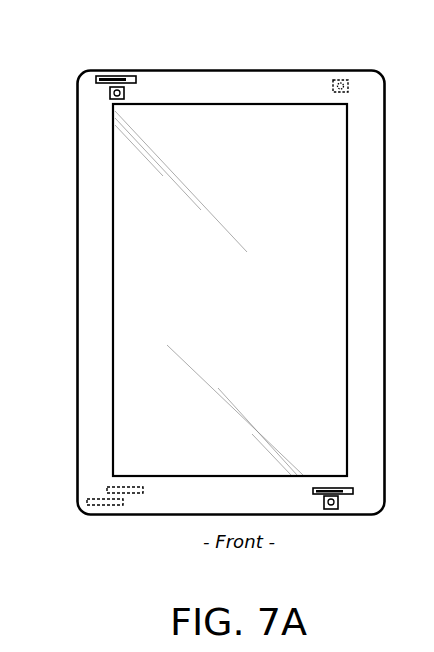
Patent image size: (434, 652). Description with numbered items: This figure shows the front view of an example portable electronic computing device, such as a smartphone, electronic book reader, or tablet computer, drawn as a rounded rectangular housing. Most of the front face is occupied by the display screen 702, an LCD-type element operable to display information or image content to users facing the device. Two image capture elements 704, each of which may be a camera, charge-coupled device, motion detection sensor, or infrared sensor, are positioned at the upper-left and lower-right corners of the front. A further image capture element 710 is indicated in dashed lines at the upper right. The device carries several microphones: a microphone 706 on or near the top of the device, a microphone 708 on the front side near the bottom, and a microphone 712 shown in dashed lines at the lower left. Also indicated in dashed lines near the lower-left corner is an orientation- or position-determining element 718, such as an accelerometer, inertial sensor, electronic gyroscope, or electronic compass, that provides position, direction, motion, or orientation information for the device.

The display screen 702 is at (113, 212).
The image capture element 704 is at (110, 93).
The microphone 706 is at (125, 76).
The microphone 708 is at (348, 494).
The image capture element 710 is at (339, 80).
The microphone 712 is at (128, 493).
The orientation- or position-determining element 718 is at (103, 505).